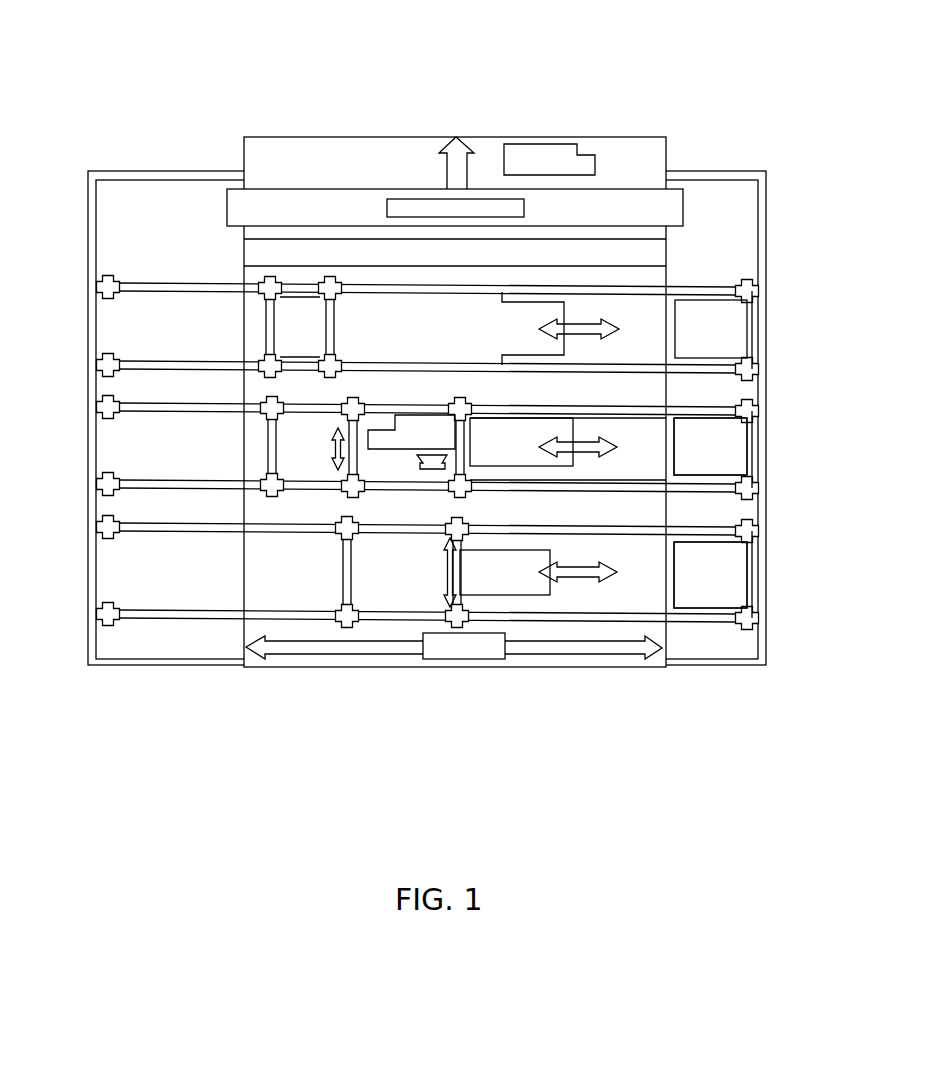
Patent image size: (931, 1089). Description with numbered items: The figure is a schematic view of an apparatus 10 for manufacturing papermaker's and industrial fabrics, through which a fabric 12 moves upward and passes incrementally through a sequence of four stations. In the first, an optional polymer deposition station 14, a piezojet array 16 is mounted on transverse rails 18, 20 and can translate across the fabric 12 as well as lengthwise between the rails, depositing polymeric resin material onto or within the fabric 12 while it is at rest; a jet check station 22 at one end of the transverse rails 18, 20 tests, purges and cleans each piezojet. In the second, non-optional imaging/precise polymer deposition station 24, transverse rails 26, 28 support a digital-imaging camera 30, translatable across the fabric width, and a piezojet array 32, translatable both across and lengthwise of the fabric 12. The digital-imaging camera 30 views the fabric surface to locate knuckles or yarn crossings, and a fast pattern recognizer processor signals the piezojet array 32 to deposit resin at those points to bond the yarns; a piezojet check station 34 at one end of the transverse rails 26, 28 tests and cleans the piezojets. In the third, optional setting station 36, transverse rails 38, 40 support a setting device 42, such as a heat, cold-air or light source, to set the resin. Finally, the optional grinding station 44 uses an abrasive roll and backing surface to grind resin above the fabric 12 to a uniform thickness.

The apparatus 10 is at (690, 93).
The fabric 12 is at (308, 659).
The optional polymer deposition station 14 is at (749, 576).
The piezojet array 16 is at (403, 576).
The transverse rail 18 is at (163, 616).
The transverse rail 20 is at (165, 530).
The jet check station 22 is at (716, 580).
The imaging/precise polymer deposition station 24 is at (749, 451).
The transverse rail 26 is at (153, 483).
The transverse rail 28 is at (148, 406).
The digital-imaging camera 30 is at (435, 464).
The piezojet array 32 is at (297, 459).
The piezojet check station 34 is at (716, 430).
The optional setting station 36 is at (750, 329).
The transverse rail 38 is at (153, 364).
The transverse rail 40 is at (188, 283).
The setting device 42 is at (280, 323).
The optional grinding station 44 is at (649, 211).